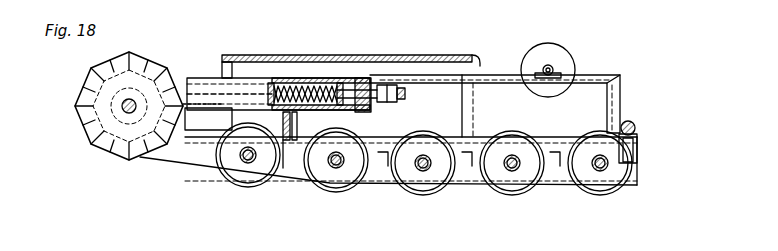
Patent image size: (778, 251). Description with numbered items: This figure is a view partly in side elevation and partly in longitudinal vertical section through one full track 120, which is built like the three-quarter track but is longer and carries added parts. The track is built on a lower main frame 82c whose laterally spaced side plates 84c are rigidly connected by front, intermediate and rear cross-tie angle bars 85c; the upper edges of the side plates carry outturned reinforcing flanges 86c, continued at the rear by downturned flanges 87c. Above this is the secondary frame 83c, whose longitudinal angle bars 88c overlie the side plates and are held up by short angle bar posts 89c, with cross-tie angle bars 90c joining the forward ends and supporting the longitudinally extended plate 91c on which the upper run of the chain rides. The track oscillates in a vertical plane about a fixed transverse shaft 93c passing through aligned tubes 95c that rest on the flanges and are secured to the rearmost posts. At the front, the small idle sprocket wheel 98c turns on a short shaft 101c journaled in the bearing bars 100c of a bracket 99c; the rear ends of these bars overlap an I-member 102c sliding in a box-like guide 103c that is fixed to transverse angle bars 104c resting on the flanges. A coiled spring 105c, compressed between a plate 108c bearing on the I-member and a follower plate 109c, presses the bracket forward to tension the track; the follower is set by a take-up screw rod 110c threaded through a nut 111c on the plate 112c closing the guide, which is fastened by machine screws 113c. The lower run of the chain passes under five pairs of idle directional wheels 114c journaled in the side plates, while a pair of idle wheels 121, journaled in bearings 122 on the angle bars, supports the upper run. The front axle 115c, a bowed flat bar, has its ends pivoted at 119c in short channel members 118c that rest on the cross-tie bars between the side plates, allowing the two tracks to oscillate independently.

The idle sprocket wheel 98c is at (92, 76).
The bearing bars 100c is at (148, 98).
The short shaft 101c is at (122, 106).
The bracket 99c is at (210, 86).
The plate 108c is at (266, 90).
The I-member 102c is at (208, 119).
The transverse angle bars 104c is at (222, 106).
The cross-tie angle bars 90c is at (230, 57).
The longitudinally extended plate 91c is at (289, 80).
The box-like guide 103c is at (306, 82).
The coiled spring 105c is at (334, 81).
The follower plate 109c is at (368, 78).
The take-up screw rod 110c is at (390, 85).
The machine screws 113c is at (398, 96).
The nut 111c is at (345, 110).
The longitudinal angle bars 88c is at (495, 78).
The angle bar posts 89c is at (470, 108).
The reinforcing flanges 86c is at (540, 135).
The idle wheels 121 is at (556, 62).
The bearings 122 is at (556, 75).
The side plates 84c is at (550, 184).
The channel members 118c is at (248, 155).
The plate 112c is at (355, 122).
The idle directional wheels 114c is at (412, 178).
The pivot 119c is at (318, 150).
The front axle 115c is at (278, 172).
The cross-tie angle bars 85c is at (560, 150).
The secondary frame 83c is at (628, 84).
The transverse shaft 93c is at (634, 125).
The tubes 95c is at (636, 131).
The downturned flanges 87c is at (632, 150).
The full track 120 is at (644, 181).
The main frame 82c is at (556, 195).